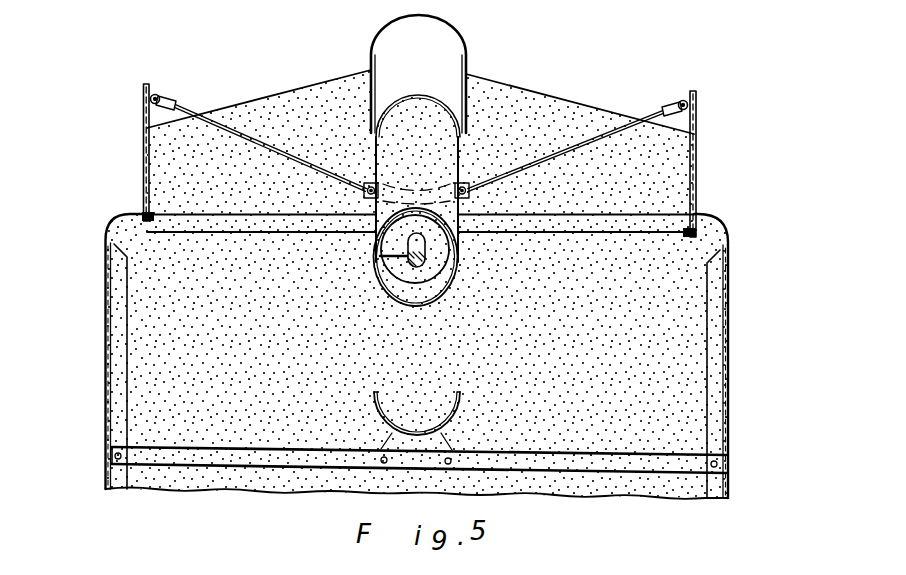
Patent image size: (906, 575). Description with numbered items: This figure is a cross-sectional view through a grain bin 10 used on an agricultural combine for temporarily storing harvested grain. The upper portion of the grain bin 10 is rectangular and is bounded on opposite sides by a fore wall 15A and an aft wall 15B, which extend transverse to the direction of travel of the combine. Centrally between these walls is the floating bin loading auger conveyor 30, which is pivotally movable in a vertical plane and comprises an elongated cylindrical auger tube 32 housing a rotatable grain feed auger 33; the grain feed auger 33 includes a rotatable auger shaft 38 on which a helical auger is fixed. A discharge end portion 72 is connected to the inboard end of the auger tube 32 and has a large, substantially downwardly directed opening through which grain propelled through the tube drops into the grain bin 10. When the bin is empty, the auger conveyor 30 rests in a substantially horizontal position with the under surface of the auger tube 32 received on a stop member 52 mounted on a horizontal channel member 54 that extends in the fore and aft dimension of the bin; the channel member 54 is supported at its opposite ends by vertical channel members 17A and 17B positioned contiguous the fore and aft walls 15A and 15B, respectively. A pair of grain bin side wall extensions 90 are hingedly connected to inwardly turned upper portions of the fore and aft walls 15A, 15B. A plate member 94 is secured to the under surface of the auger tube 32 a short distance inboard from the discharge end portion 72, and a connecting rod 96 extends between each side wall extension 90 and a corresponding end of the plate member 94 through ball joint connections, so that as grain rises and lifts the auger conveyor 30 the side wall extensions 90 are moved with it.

The grain bin 10 is at (97, 387).
The fore wall 15A is at (728, 311).
The aft wall 15B is at (106, 308).
The vertical channel member 17A is at (711, 347).
The vertical channel member 17B is at (128, 336).
The floating bin loading auger conveyor 30 is at (446, 299).
The auger tube 32 is at (375, 141).
The grain feed auger 33 is at (380, 273).
The rotatable auger shaft 38 is at (426, 262).
The stop member 52 is at (373, 400).
The horizontal channel member 54 is at (323, 447).
The discharge end portion 72 is at (480, 59).
The grain bin side wall extension 90 is at (143, 113).
The plate member 94 is at (478, 196).
The connecting rod 96 is at (188, 110).